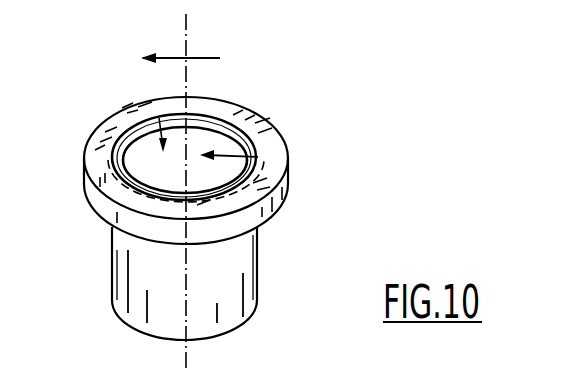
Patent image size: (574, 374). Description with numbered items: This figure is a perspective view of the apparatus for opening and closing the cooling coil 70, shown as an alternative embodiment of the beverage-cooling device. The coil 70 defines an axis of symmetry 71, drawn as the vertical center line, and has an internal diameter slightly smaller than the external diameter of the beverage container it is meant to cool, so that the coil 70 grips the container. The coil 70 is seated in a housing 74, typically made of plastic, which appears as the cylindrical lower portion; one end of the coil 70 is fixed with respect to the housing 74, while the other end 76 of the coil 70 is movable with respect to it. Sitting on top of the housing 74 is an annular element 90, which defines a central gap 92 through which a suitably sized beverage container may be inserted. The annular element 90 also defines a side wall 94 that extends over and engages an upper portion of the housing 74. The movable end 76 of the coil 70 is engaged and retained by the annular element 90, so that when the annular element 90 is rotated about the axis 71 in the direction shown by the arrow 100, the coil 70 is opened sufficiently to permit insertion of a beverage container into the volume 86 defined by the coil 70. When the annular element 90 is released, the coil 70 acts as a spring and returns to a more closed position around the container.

The arrow 100 is at (175, 56).
The axis of symmetry 71 is at (189, 46).
The coil 70 is at (232, 125).
The annular element 90 is at (270, 133).
The side wall 94 is at (255, 170).
The gap 92 is at (270, 160).
The volume 86 is at (159, 120).
The end of coil 76 is at (113, 203).
The housing 74 is at (112, 273).